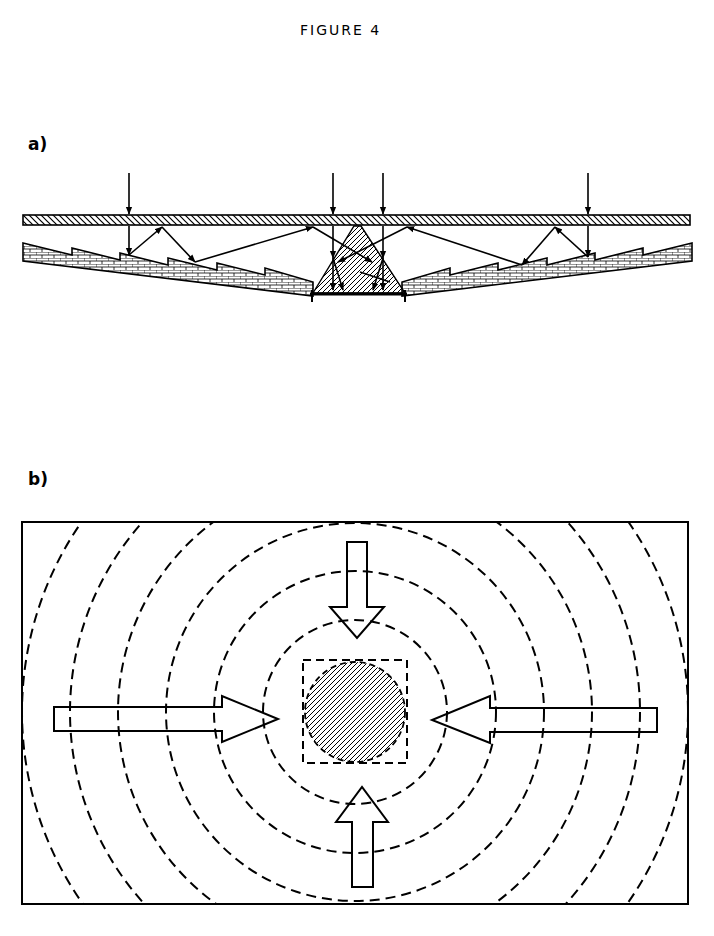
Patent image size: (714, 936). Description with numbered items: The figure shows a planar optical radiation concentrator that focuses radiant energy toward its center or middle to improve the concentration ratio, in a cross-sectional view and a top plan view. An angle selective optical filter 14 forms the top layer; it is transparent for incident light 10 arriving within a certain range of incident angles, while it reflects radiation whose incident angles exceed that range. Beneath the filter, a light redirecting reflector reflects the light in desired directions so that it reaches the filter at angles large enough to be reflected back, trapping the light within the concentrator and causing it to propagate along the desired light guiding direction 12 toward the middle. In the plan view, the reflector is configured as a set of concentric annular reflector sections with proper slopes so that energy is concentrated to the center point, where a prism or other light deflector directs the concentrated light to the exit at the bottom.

The incident light 10 is at (333, 188).
The light guiding direction 12 is at (88, 720).
The angle selective optical filter 14 is at (532, 218).